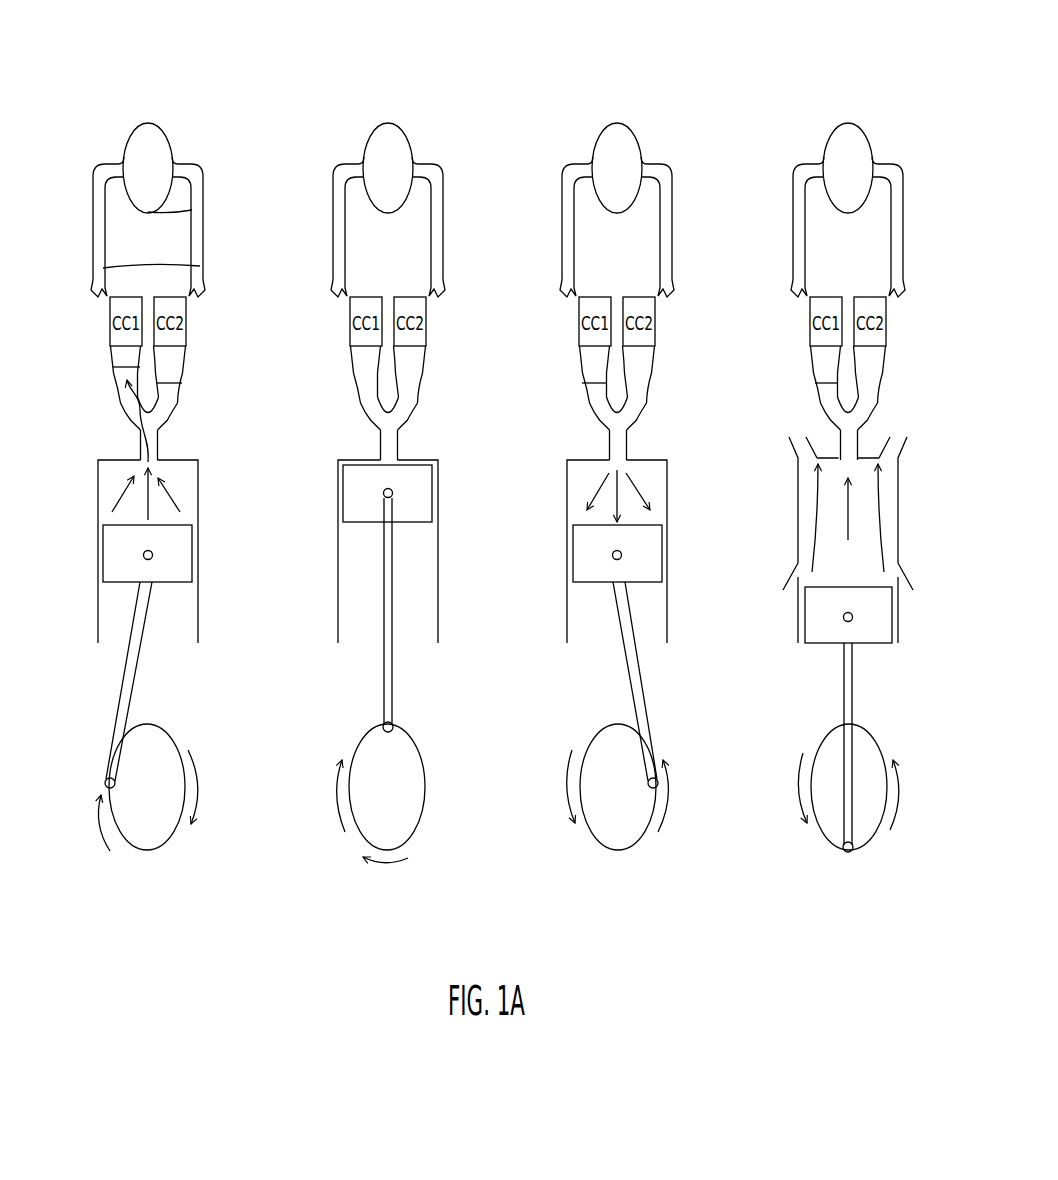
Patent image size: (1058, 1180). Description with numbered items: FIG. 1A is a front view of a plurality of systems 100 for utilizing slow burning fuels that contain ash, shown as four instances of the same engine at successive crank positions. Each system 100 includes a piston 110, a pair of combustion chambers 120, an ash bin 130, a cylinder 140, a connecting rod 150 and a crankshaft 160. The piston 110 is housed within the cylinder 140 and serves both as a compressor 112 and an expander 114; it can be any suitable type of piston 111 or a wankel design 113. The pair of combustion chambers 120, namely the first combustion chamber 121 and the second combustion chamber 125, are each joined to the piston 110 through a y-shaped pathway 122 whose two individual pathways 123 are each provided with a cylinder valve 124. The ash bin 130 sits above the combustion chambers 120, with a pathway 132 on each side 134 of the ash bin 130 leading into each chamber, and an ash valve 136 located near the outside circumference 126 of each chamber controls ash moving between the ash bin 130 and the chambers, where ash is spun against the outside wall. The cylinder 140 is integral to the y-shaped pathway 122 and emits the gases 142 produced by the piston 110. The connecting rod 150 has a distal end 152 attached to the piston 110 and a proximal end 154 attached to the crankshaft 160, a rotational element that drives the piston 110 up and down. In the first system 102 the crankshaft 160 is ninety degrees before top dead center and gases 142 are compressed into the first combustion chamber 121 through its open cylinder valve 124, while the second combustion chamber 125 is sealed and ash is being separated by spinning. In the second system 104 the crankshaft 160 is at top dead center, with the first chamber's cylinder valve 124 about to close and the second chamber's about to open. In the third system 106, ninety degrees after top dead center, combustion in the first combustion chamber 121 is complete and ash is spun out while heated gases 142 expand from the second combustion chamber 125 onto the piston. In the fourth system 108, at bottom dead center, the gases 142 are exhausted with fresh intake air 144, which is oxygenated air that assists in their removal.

The system 100 is at (476, 437).
The piston 111 is at (476, 437).
The wankel design 113 is at (84, 64).
The first system 102 is at (133, 110).
The second system 104 is at (373, 110).
The third system 106 is at (603, 110).
The fourth system 108 is at (835, 110).
The piston 110 is at (105, 525).
The compressor 112 is at (105, 525).
The expander 114 is at (125, 535).
The pair of combustion chambers 120 is at (135, 279).
The first combustion chamber 121 is at (107, 303).
The y-shaped pathway 122 is at (147, 443).
The individual pathway 123 is at (113, 364).
The cylinder valve 124 is at (180, 402).
The second combustion chamber 125 is at (183, 338).
The outside circumference 126 is at (135, 279).
The ash bin 130 is at (143, 157).
The pathway 132 is at (148, 212).
The side 134 is at (125, 143).
The ash valve 136 is at (193, 293).
The cylinder 140 is at (97, 458).
The gases 142 is at (175, 492).
The fresh intake air 144 is at (788, 587).
The connecting rod 150 is at (118, 681).
The distal end 152 is at (142, 557).
The proximal end 154 is at (107, 777).
The crankshaft 160 is at (140, 827).